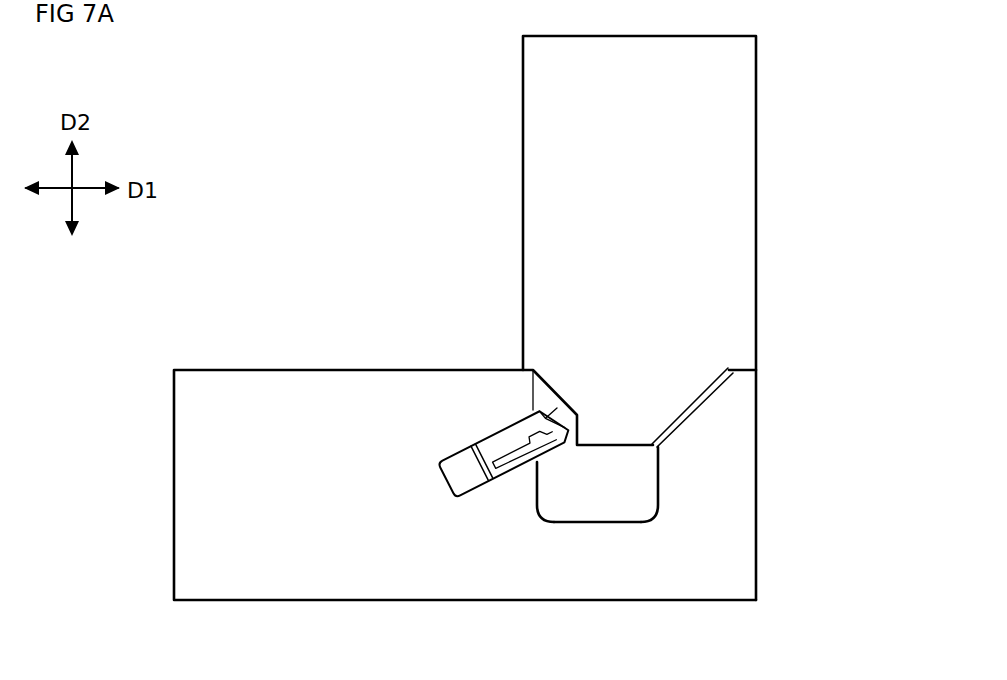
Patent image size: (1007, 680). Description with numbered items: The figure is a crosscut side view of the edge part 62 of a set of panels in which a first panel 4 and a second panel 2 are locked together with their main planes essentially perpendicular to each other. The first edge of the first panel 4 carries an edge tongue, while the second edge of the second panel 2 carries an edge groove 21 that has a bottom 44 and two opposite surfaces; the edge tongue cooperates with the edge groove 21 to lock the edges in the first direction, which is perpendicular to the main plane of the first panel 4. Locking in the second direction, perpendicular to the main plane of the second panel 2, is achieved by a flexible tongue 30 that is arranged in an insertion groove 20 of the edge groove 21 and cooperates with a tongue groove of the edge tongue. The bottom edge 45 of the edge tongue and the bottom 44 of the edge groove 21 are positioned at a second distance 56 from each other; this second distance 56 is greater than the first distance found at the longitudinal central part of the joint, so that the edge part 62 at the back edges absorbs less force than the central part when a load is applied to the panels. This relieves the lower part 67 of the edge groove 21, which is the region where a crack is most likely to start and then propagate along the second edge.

The second panel 2 is at (300, 415).
The first panel 4 is at (718, 177).
The insertion groove 20 is at (443, 480).
The edge groove 21 is at (558, 503).
The flexible tongue 30 is at (512, 438).
The bottom 44 is at (572, 525).
The bottom edge 45 is at (638, 445).
The second distance 56 is at (617, 448).
The edge part 62 is at (372, 242).
The lower part of the edge groove 67 is at (647, 523).